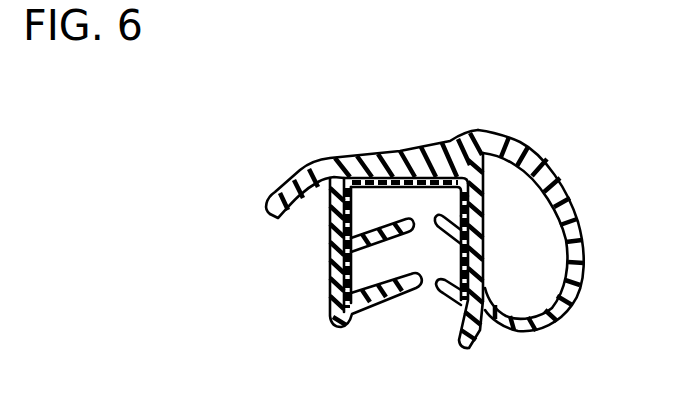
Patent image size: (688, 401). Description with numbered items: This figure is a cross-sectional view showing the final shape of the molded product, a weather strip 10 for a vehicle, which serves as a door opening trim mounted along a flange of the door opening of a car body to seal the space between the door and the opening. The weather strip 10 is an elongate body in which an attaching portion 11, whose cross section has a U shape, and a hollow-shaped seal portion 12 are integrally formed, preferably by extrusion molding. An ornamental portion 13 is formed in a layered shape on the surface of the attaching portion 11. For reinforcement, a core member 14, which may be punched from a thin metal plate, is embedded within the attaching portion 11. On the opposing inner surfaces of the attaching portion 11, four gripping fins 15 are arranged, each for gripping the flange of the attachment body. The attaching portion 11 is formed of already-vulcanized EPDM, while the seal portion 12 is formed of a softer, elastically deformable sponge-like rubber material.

The weather strip 10 is at (551, 77).
The attaching portion 11 is at (330, 257).
The seal portion 12 is at (562, 190).
The ornamental portion 13 is at (352, 158).
The core member 14 is at (461, 266).
The gripping fins 15 is at (441, 284).